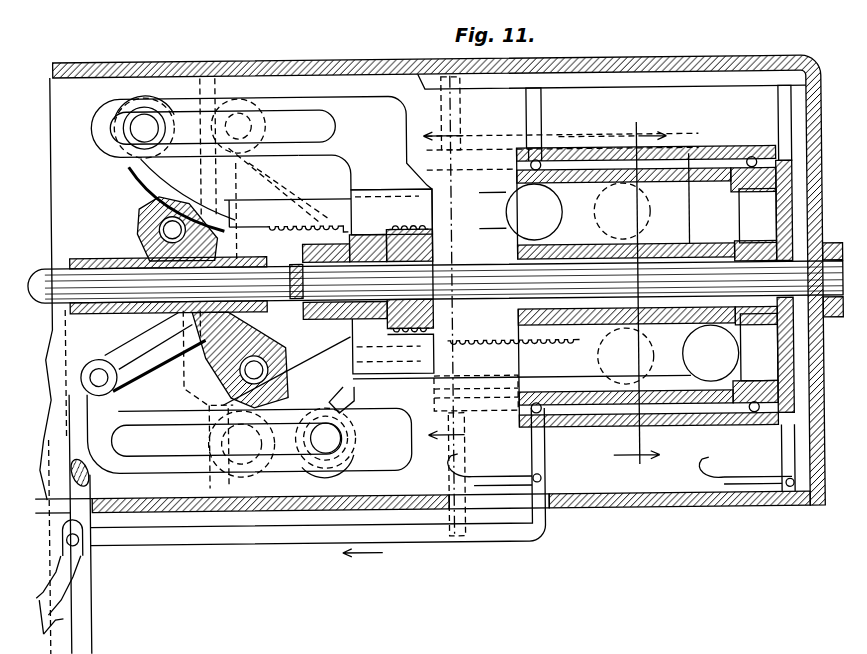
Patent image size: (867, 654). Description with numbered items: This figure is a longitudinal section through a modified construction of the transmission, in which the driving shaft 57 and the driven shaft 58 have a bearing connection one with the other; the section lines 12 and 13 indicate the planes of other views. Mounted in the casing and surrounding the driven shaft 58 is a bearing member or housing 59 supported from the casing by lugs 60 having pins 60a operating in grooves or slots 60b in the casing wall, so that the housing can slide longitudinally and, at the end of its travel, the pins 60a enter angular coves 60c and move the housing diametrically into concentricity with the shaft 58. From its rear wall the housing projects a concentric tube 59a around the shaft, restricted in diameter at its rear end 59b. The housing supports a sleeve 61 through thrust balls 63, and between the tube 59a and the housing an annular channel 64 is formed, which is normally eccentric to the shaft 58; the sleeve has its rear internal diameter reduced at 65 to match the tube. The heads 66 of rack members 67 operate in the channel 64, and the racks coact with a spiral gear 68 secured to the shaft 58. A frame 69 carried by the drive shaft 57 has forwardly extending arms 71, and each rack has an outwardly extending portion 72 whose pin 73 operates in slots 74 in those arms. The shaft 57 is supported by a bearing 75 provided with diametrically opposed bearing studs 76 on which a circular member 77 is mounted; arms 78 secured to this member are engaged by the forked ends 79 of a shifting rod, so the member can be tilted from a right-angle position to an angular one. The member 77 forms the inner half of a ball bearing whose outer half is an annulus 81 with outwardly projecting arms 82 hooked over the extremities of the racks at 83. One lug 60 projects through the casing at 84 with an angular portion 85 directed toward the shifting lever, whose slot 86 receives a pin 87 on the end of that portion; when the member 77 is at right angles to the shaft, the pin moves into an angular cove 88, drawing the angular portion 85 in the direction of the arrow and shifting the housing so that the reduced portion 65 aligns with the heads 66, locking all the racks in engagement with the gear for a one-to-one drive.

The section line 12 is at (563, 304).
The section line 13 is at (614, 291).
The driving shaft 57 is at (435, 354).
The driven shaft 58 is at (698, 283).
The bearing member or housing 59 is at (607, 389).
The concentric tube 59a is at (687, 243).
The restricted rear end of tube 59b is at (756, 252).
The lugs 60 is at (528, 128).
The pins 60a is at (537, 480).
The grooves or slots 60b is at (497, 494).
The angular coves 60c is at (452, 473).
The sleeve 61 is at (572, 152).
The thrust balls 63 is at (752, 165).
The annular channel 64 is at (690, 205).
The reduced internal diameter of sleeve 65 is at (754, 336).
The heads 66 is at (622, 283).
The rack members 67 is at (304, 239).
The spiral gear 68 is at (410, 341).
The frame 69 is at (354, 91).
The arms 71 is at (212, 91).
The outwardly extending portion 72 is at (203, 196).
The transversely extending pin 73 is at (150, 126).
The slots 74 is at (295, 120).
The bearing 75 is at (135, 317).
The bearing studs 76 is at (183, 323).
The circular member 77 is at (231, 366).
The arms 78 is at (150, 358).
The forked ends 79 is at (80, 407).
The annulus 81 is at (142, 222).
The outwardly projecting arms 82 is at (134, 175).
The hooked ends 83 is at (140, 96).
The projecting portion of lug 84 is at (548, 514).
The angular portion 85 is at (300, 546).
The slot 86 is at (80, 574).
The pin 87 is at (76, 549).
The angular cove 88 is at (62, 593).